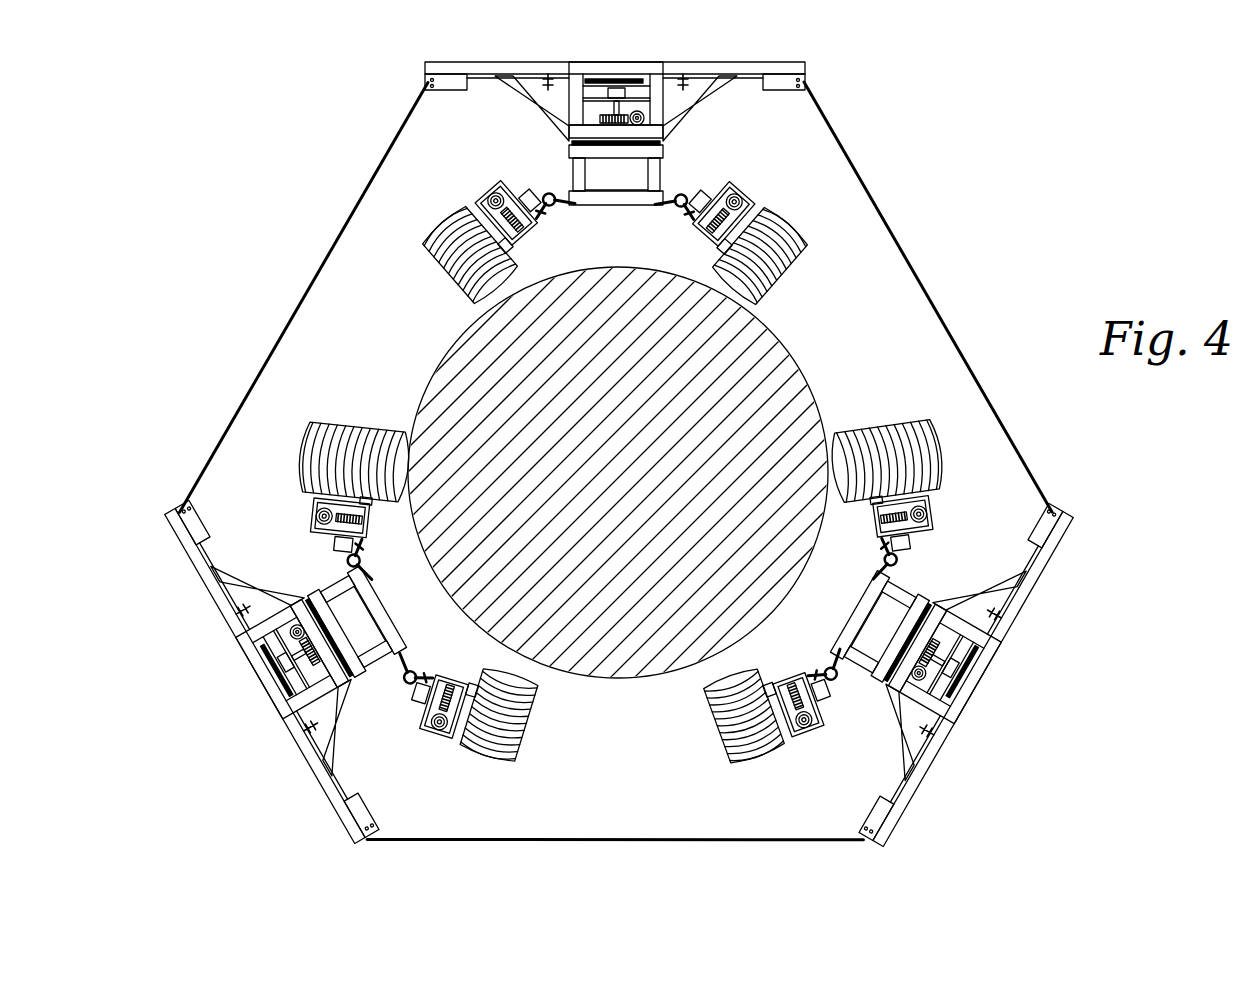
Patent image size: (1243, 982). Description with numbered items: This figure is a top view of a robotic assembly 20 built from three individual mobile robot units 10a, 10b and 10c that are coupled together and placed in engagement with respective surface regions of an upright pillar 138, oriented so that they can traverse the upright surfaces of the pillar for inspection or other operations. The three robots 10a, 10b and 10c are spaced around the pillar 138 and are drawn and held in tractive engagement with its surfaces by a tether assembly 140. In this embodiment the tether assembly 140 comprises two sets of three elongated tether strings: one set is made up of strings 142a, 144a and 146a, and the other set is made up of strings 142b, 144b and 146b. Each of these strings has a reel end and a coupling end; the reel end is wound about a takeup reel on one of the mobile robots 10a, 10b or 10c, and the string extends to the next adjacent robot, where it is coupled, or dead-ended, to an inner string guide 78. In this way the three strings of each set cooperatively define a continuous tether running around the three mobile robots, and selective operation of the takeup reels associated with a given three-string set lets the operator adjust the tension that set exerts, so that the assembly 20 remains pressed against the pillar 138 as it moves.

The mobile robot unit 10a is at (773, 186).
The mobile robot unit 10b is at (953, 580).
The mobile robot unit 10c is at (443, 792).
The robotic assembly 20 is at (596, 501).
The inner string guide 78 is at (684, 88).
The pillar 138 is at (786, 364).
The tether assembly 140 is at (596, 501).
The tether string 142a is at (915, 265).
The tether string 142b is at (672, 76).
The tether string 144a is at (303, 296).
The tether string 144b is at (217, 608).
The tether string 146a is at (572, 840).
The tether string 146b is at (938, 748).